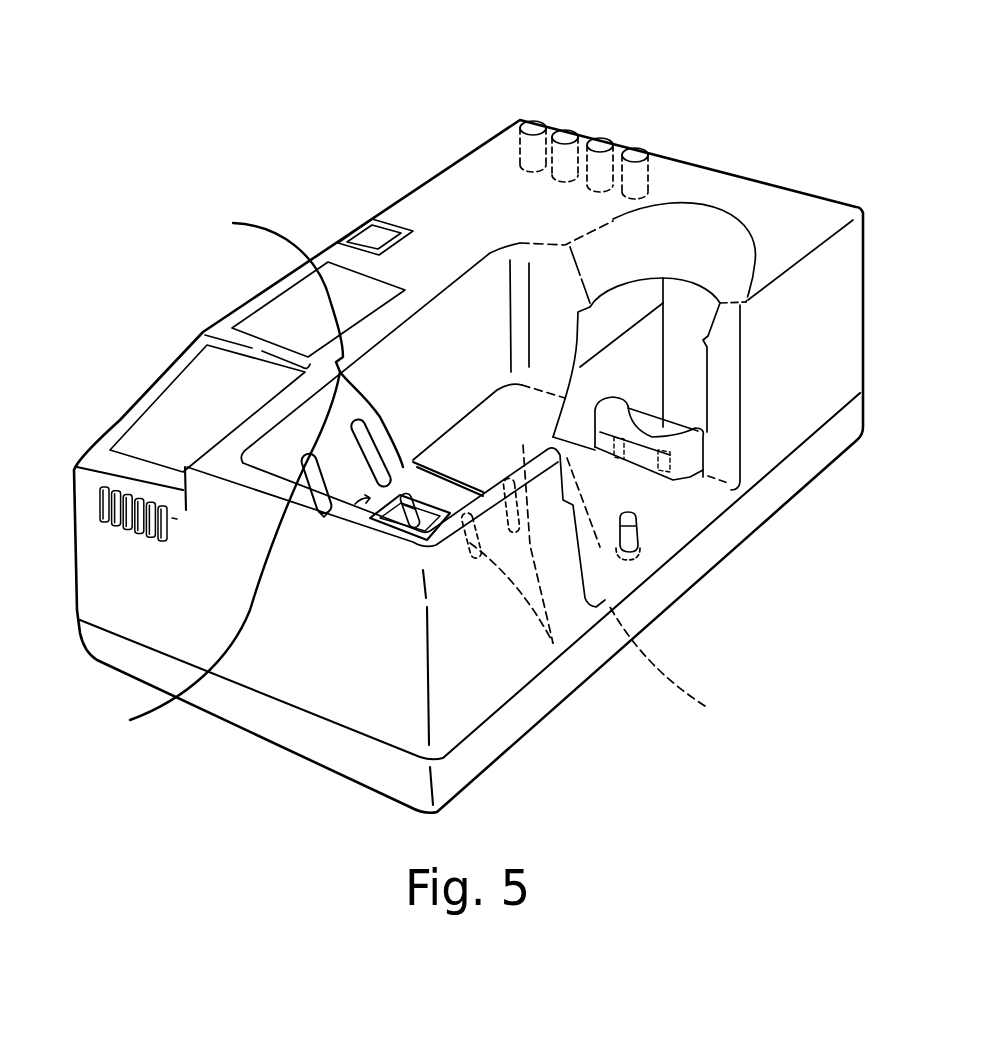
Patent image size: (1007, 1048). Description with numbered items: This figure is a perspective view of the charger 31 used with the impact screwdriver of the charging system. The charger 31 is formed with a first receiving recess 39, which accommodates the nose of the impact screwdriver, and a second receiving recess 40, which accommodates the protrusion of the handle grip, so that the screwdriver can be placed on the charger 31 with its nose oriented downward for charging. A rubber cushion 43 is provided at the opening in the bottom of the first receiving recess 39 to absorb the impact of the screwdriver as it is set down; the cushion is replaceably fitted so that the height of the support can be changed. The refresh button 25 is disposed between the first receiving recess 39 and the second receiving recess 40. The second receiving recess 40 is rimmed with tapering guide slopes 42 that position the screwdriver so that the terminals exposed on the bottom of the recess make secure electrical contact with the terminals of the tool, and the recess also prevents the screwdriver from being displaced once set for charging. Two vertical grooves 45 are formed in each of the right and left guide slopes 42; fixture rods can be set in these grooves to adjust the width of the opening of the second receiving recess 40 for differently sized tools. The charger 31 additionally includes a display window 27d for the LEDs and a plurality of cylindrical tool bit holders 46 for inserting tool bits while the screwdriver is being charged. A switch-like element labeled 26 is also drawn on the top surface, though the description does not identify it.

The charger 31 is at (667, 112).
The display window 27d is at (156, 443).
The switch 26 is at (372, 233).
The cylindrical tool bit holders 46 is at (531, 122).
The first receiving recess 39 is at (689, 263).
The rubber cushion 43 is at (705, 438).
The refresh button 25 is at (634, 514).
The second receiving recess 40 is at (355, 497).
The vertical grooves 45 is at (360, 425).
The tapering guide slopes 42 is at (418, 471).